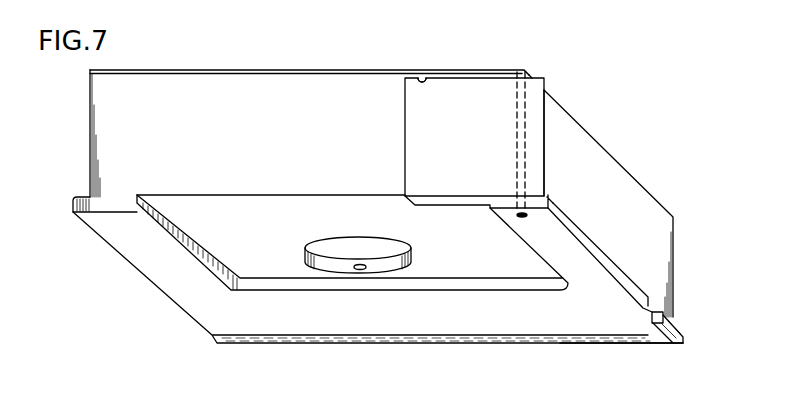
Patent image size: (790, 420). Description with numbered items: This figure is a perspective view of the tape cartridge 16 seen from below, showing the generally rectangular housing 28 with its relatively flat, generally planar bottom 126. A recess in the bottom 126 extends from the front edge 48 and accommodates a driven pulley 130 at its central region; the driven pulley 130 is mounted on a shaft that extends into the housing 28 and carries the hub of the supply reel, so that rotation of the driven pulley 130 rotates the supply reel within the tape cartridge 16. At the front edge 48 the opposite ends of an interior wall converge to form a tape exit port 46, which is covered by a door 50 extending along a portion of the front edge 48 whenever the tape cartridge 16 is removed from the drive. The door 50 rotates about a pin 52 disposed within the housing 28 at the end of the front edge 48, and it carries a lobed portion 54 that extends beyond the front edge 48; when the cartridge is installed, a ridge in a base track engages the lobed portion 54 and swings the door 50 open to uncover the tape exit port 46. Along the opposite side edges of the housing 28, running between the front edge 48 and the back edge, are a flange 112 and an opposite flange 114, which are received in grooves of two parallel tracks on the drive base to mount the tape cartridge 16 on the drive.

The tape cartridge 16 is at (378, 214).
The housing 28 is at (176, 236).
The tape exit port 46 is at (417, 77).
The front edge 48 is at (234, 75).
The door 50 is at (455, 87).
The pin 52 is at (528, 102).
The lobed portion 54 is at (546, 136).
The flange 112 is at (684, 333).
The flange 114 is at (77, 204).
The bottom 126 is at (614, 331).
The driven pulley 130 is at (400, 262).